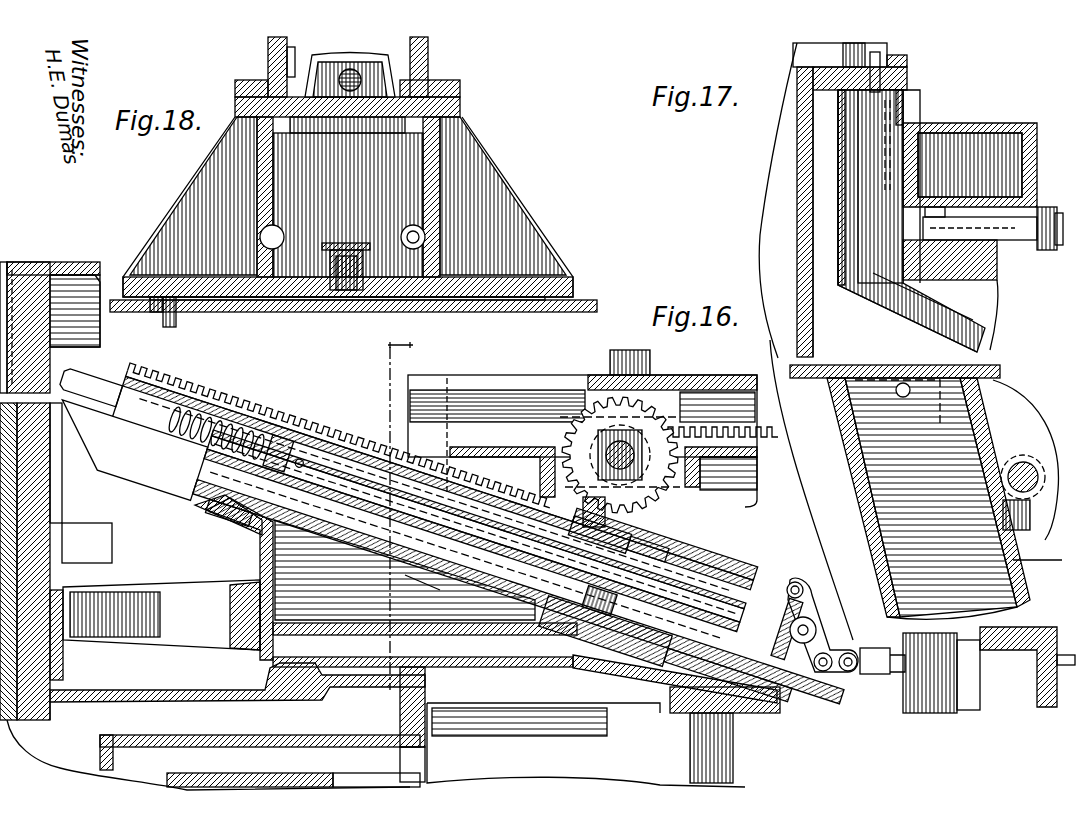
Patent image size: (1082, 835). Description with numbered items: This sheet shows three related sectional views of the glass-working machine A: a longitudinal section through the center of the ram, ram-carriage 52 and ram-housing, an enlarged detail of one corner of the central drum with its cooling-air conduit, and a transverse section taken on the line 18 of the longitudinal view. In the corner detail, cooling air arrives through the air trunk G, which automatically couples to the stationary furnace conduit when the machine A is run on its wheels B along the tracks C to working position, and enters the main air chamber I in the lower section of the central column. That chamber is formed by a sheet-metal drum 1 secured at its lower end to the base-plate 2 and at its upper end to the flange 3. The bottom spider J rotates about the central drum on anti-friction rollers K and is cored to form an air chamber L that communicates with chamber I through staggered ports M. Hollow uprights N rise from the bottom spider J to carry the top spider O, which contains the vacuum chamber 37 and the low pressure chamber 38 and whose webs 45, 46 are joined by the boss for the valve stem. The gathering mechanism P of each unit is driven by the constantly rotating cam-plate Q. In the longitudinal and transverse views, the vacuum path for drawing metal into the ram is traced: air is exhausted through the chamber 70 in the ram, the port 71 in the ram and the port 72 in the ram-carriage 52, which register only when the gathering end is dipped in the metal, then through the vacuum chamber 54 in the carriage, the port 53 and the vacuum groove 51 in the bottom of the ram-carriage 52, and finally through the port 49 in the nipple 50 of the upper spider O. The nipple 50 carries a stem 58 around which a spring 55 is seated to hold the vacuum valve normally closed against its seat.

In FIG. 18, the top spider O is at (361, 169).
In FIG. 16, the top spider O is at (168, 690).
In FIG. 18, the vacuum groove 51 is at (532, 300).
In FIG. 16, the vacuum groove 51 is at (368, 667).
In FIG. 18, the port 49 is at (180, 312).
In FIG. 18, the nipple 50 is at (158, 312).
In FIG. 18, the stem 58 is at (168, 328).
In FIG. 18, the spring 55 is at (346, 297).
In FIG. 18, the vacuum chamber 54 is at (348, 249).
In FIG. 16, the vacuum chamber 54 is at (600, 655).
In FIG. 18, the ram-carriage 52 is at (420, 233).
In FIG. 16, the ram-carriage 52 is at (250, 575).
In FIG. 18, the section line 18 is at (407, 336).
In FIG. 16, the section line 18 is at (396, 529).
In FIG. 17, the sheet-metal drum 1 is at (794, 212).
In FIG. 17, the flange 3 is at (838, 94).
In FIG. 17, the air chamber I is at (911, 221).
In FIG. 17, the machine A is at (857, 306).
In FIG. 17, the ports M is at (890, 140).
In FIG. 17, the bottom spider J is at (925, 123).
In FIG. 17, the air chamber L is at (970, 165).
In FIG. 17, the rollers K is at (950, 295).
In FIG. 16, the cam-plate Q is at (84, 275).
In FIG. 16, the port 71 is at (220, 520).
In FIG. 16, the vacuum chamber 37 is at (237, 693).
In FIG. 16, the web 45 is at (158, 735).
In FIG. 16, the web 46 is at (215, 767).
In FIG. 16, the low pressure chamber 38 is at (335, 767).
In FIG. 16, the hollow uprights N is at (740, 775).
In FIG. 16, the port 72 is at (632, 660).
In FIG. 16, the port 53 is at (440, 590).
In FIG. 16, the gathering mechanism P is at (332, 422).
In FIG. 16, the chamber 70 is at (397, 510).
In FIG. 16, the base-plate 2 is at (815, 378).
In FIG. 16, the air trunk G is at (928, 498).
In FIG. 16, the wheels B is at (1032, 528).
In FIG. 16, the tracks C is at (1050, 562).